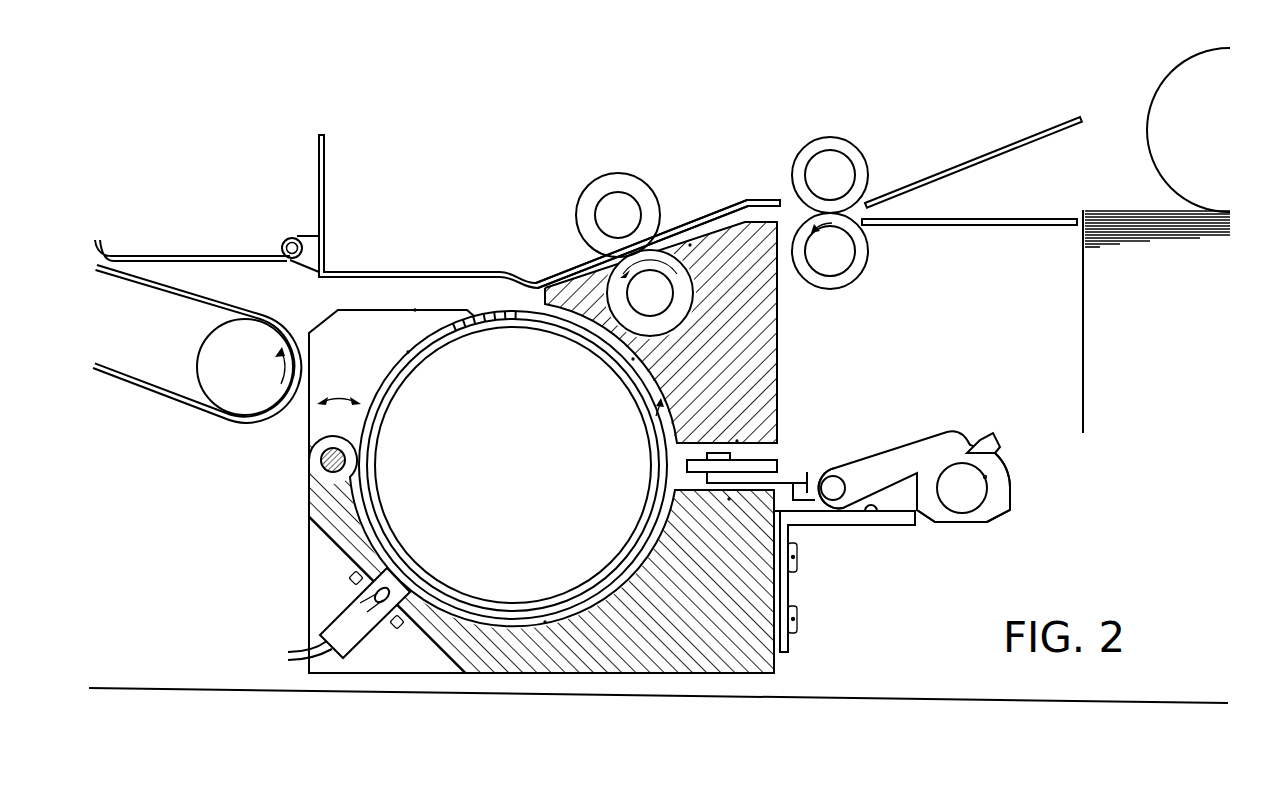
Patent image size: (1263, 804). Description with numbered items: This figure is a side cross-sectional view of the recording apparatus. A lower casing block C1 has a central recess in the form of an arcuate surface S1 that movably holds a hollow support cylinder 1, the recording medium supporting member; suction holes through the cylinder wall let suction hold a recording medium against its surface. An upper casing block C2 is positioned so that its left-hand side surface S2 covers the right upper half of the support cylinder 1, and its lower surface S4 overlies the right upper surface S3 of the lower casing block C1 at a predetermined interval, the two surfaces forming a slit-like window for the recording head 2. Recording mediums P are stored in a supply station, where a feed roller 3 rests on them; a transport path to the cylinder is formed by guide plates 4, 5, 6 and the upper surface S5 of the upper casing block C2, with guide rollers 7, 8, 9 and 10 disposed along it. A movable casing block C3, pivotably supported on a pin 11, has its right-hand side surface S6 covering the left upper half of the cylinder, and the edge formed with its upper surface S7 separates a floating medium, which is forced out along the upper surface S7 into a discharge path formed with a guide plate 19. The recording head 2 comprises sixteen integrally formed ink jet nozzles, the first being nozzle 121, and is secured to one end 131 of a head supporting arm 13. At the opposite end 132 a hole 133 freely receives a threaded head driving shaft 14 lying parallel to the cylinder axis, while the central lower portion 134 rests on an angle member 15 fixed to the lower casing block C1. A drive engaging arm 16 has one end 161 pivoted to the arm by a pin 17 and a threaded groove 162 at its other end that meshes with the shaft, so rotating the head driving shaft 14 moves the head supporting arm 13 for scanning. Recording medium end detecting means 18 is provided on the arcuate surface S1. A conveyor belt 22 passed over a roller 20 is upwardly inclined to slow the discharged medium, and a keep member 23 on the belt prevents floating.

The recording medium supporting member 1 is at (533, 313).
The recording head 2 is at (765, 460).
The feed roller 3 is at (1162, 90).
The guide plate 4 is at (976, 157).
The guide plate 5 is at (1000, 226).
The guide plate 6 is at (740, 203).
The guide roller 7 is at (841, 147).
The guide roller 8 is at (857, 275).
The guide roller 9 is at (600, 190).
The guide roller 10 is at (684, 297).
The pin 11 is at (320, 461).
The ink jet nozzle 121 is at (688, 465).
The head supporting arm 13 is at (806, 482).
The end of head supporting arm 131 is at (713, 453).
The end of head supporting arm 132 is at (1011, 503).
The hole 133 is at (986, 478).
The central lower portion 134 is at (876, 513).
The head driving shaft 14 is at (965, 512).
The angle member 15 is at (846, 526).
The drive engaging arm 16 is at (961, 432).
The end of drive engaging arm 161 is at (833, 468).
The threaded groove 162 is at (986, 438).
The pin 17 is at (844, 491).
The recording medium end detecting means 18 is at (352, 618).
The guide plate 19 is at (378, 272).
The roller 20 is at (213, 350).
The conveyor belt 22 is at (205, 299).
The keep member 23 is at (200, 256).
The lower casing block C1 is at (766, 664).
The upper casing block C2 is at (778, 333).
The movable casing block C3 is at (328, 343).
The recording mediums P is at (1090, 289).
The arcuate surface S1 is at (545, 622).
The left-hand side surface S2 is at (633, 359).
The right upper surface S3 is at (729, 499).
The lower surface S4 is at (737, 441).
The upper surface S5 is at (690, 245).
The right-hand side surface S6 is at (408, 352).
The upper surface S7 is at (415, 310).